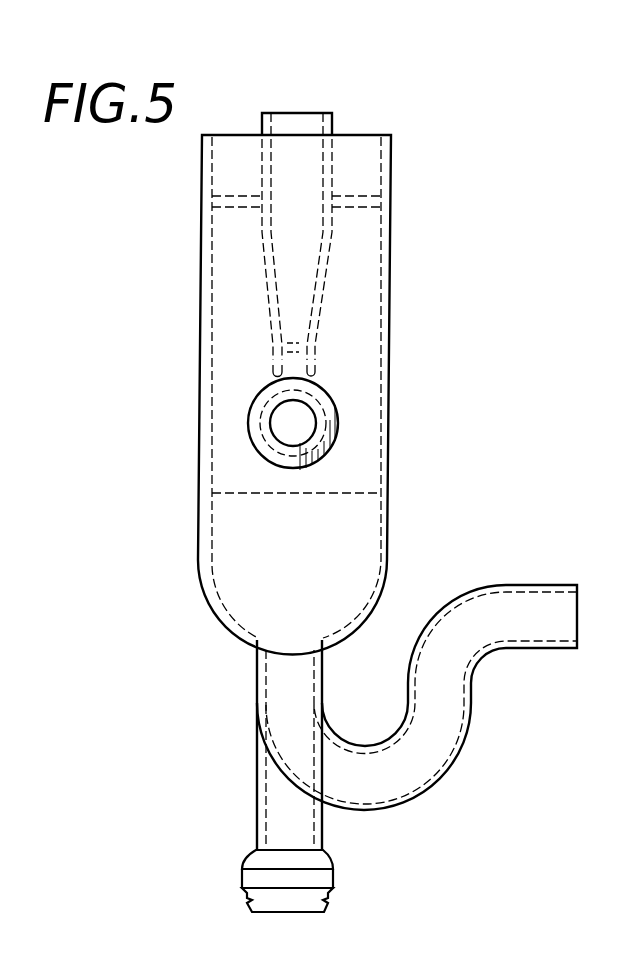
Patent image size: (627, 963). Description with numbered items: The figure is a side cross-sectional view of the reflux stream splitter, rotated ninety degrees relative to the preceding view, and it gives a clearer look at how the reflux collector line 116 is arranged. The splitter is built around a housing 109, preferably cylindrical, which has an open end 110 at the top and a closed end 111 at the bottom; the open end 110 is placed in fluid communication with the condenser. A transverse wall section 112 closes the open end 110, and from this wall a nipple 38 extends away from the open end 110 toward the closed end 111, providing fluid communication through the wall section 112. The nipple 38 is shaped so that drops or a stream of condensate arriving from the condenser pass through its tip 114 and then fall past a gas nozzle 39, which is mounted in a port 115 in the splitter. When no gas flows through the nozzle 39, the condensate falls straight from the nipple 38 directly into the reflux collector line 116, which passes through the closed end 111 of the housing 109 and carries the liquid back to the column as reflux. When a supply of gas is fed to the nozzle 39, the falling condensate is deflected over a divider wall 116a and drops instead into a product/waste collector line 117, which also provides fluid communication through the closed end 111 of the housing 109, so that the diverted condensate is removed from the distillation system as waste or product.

The housing 109 is at (392, 336).
The open end 110 is at (367, 158).
The transverse wall section 112 is at (367, 207).
The nipple 38 is at (325, 289).
The tip 114 is at (318, 378).
The port 115 is at (323, 397).
The gas nozzle 39 is at (302, 430).
The divider wall 116a is at (243, 494).
The closed end 111 is at (226, 631).
The reflux collector line 116 is at (272, 683).
The product/waste collector line 117 is at (272, 803).